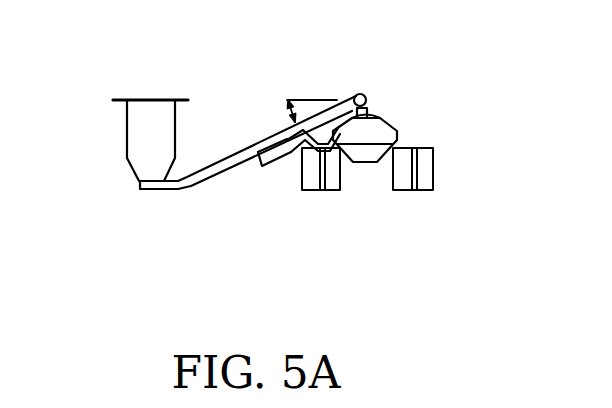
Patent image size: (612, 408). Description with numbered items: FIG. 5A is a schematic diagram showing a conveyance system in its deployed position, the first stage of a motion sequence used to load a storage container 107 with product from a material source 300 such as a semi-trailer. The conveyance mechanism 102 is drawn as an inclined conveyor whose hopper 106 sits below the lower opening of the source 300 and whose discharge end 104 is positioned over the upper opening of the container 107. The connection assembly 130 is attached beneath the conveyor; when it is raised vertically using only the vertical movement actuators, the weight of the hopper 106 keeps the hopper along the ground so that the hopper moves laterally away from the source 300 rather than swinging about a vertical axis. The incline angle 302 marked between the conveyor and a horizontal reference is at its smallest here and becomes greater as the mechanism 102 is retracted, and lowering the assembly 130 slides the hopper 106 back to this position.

The conveyance mechanism 102 is at (262, 156).
The discharge end 104 is at (380, 106).
The hopper 106 is at (130, 188).
The storage container 107 is at (375, 132).
The connection assembly 130 is at (262, 172).
The material source 300 is at (146, 124).
The incline angle 302 is at (288, 114).